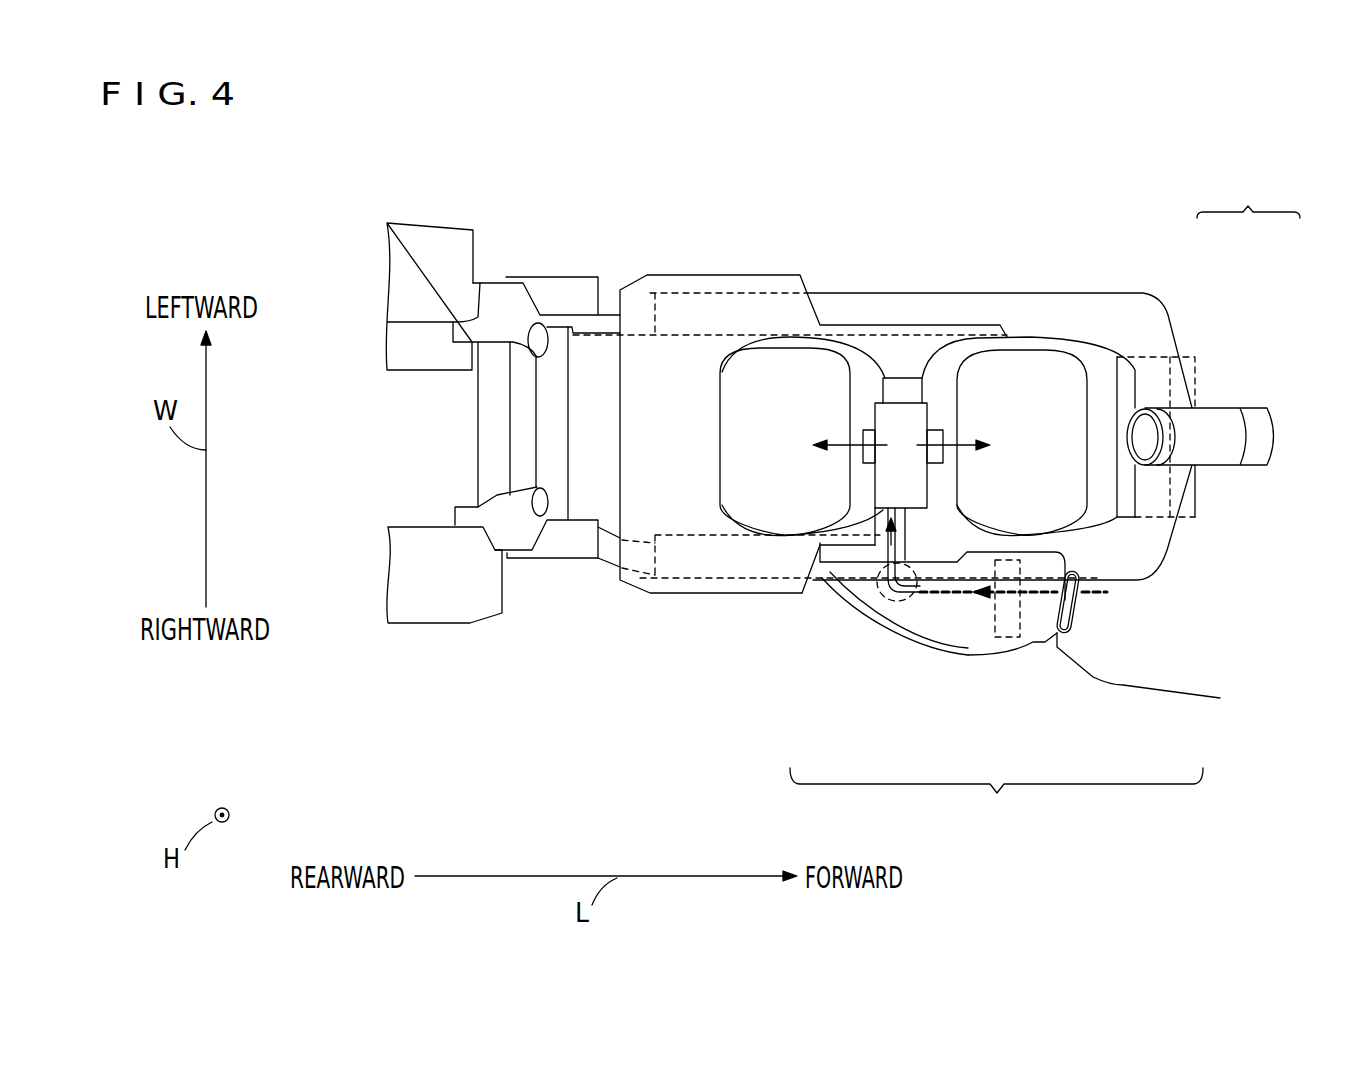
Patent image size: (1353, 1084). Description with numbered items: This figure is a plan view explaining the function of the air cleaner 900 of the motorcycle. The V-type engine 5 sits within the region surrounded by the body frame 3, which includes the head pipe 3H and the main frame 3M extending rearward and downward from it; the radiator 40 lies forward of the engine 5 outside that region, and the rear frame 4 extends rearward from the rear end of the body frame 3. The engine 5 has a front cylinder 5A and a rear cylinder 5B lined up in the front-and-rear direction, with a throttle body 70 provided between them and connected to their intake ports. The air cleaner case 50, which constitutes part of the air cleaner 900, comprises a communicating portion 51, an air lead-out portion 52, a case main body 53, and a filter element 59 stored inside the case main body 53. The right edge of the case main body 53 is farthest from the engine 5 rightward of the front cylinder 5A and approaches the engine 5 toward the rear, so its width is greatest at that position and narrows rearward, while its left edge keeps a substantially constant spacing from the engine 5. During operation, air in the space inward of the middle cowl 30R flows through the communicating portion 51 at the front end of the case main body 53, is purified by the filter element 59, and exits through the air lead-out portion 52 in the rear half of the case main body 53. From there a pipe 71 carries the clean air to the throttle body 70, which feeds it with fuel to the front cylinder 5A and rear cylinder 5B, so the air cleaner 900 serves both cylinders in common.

The body frame 3 is at (1248, 192).
The main frame 3M is at (1180, 316).
The head pipe 3H is at (1210, 432).
The rear frame 4 is at (432, 237).
The V-type engine 5 is at (721, 259).
The front cylinder 5A is at (1057, 380).
The rear cylinder 5B is at (807, 380).
The middle cowl 30R is at (1123, 685).
The radiator 40 is at (1190, 507).
The air cleaner case 50 is at (883, 643).
The communicating portion 51 is at (1053, 632).
The air lead-out portion 52 is at (883, 590).
The case main body 53 is at (922, 643).
The filter element 59 is at (1000, 618).
The throttle body 70 is at (900, 430).
The pipe 71 is at (873, 552).
The air cleaner 900 is at (996, 802).